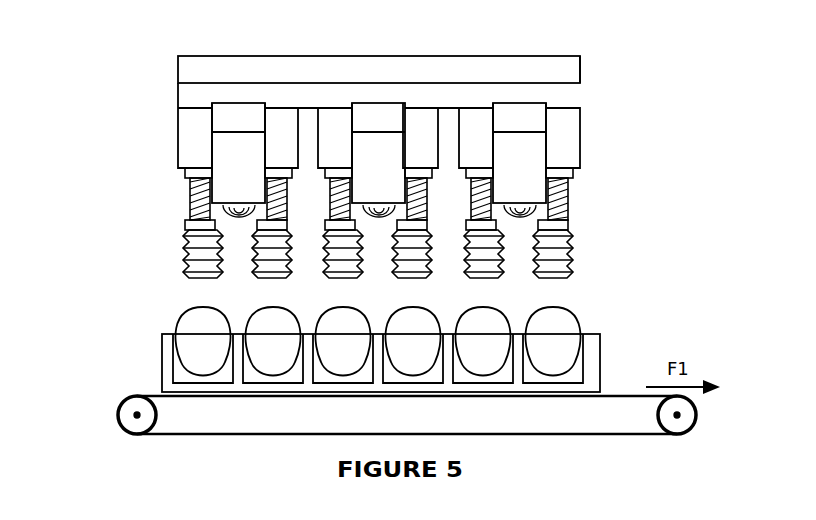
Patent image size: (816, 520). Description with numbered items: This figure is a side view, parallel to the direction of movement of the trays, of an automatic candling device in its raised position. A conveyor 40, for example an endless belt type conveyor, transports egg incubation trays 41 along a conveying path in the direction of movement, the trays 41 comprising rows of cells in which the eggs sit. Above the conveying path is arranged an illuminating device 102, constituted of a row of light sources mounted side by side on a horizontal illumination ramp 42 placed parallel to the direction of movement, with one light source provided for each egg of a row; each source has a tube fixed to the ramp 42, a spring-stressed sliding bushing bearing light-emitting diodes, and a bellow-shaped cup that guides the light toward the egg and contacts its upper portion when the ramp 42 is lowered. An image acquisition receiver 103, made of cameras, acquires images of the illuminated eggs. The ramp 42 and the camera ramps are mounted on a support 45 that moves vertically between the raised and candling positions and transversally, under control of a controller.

The support 45 is at (430, 60).
The illumination ramp 42 is at (568, 97).
The image acquisition receiver 103 is at (230, 168).
The illuminating device 102 is at (592, 236).
The egg incubation tray 41 is at (166, 363).
The conveyor 40 is at (135, 410).